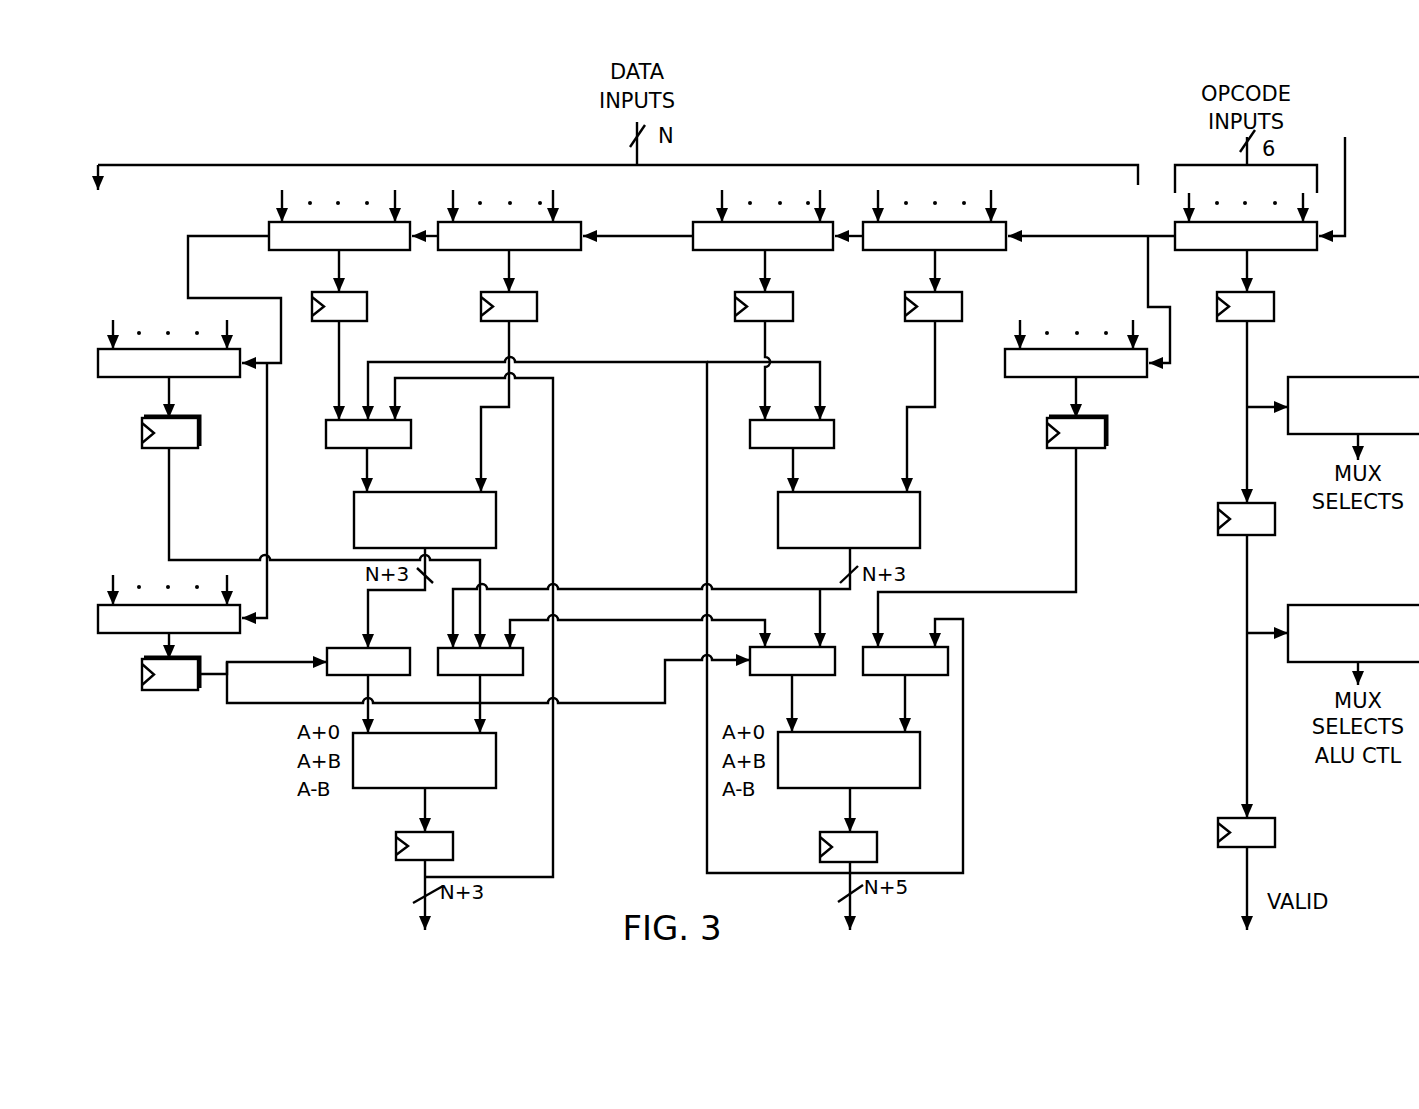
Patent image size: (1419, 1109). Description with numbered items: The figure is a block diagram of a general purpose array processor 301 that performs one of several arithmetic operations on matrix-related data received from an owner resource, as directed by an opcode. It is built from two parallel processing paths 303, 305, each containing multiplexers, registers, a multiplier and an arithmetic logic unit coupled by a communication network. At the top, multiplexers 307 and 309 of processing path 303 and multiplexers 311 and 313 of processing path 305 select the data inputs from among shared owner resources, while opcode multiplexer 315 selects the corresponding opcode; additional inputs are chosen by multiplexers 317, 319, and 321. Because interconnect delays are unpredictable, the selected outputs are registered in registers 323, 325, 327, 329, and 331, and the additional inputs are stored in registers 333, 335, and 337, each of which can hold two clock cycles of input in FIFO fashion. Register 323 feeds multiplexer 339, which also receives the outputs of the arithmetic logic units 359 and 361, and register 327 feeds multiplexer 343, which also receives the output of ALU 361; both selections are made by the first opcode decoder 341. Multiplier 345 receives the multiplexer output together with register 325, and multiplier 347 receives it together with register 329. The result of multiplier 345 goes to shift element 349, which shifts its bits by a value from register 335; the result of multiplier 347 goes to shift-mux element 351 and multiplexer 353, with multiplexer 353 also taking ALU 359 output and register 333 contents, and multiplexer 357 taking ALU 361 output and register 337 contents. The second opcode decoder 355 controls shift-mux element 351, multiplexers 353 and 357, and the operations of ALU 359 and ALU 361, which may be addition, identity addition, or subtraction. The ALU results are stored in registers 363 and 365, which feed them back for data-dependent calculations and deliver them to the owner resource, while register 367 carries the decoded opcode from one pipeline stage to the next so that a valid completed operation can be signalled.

The general purpose array processor 301 is at (357, 128).
The processing path 303 is at (282, 833).
The processing path 305 is at (1040, 795).
The multiplexer 307 is at (270, 220).
The multiplexer 309 is at (560, 220).
The multiplexer 311 is at (712, 220).
The multiplexer 313 is at (1000, 220).
The opcode multiplexer 315 is at (1184, 220).
The multiplexer 317 is at (156, 378).
The multiplexer 319 is at (152, 634).
The multiplexer 321 is at (1009, 348).
The register 323 is at (362, 292).
The register 325 is at (540, 292).
The register 327 is at (741, 292).
The register 329 is at (908, 292).
The register 331 is at (1270, 292).
The register 333 is at (188, 418).
The register 335 is at (155, 692).
The register 337 is at (1105, 418).
The multiplexer 339 is at (410, 420).
The first opcode decoder 341 is at (1357, 377).
The multiplexer 343 is at (830, 420).
The multiplier 345 is at (496, 492).
The multiplier 347 is at (920, 492).
The shift element 349 is at (329, 648).
The shift-mux element 351 is at (775, 677).
The multiplexer 353 is at (438, 661).
The second opcode decoder 355 is at (1358, 605).
The multiplexer 357 is at (863, 661).
The arithmetic logic unit 359 is at (405, 790).
The arithmetic logic unit 361 is at (875, 732).
The register 363 is at (441, 832).
The register 365 is at (865, 832).
The register 367 is at (1221, 503).